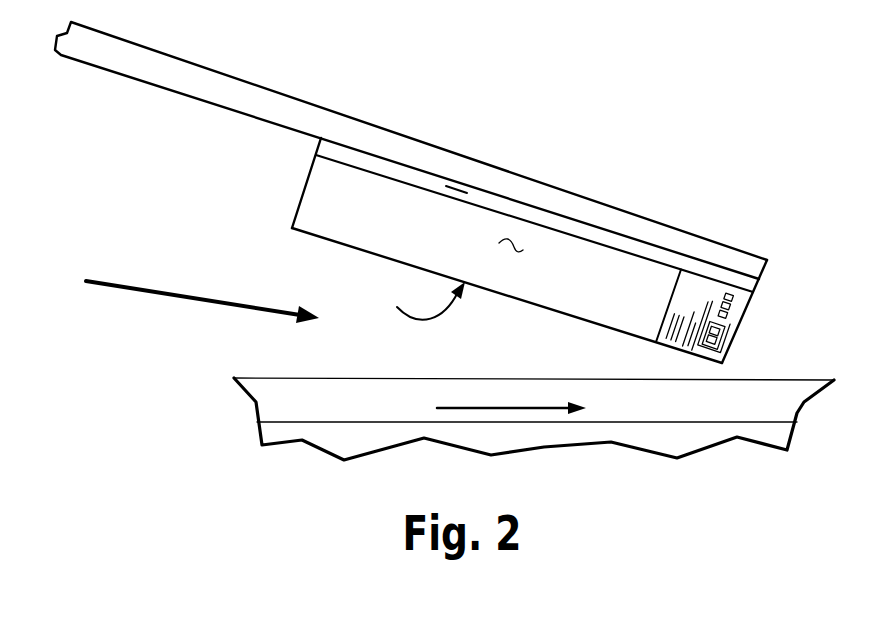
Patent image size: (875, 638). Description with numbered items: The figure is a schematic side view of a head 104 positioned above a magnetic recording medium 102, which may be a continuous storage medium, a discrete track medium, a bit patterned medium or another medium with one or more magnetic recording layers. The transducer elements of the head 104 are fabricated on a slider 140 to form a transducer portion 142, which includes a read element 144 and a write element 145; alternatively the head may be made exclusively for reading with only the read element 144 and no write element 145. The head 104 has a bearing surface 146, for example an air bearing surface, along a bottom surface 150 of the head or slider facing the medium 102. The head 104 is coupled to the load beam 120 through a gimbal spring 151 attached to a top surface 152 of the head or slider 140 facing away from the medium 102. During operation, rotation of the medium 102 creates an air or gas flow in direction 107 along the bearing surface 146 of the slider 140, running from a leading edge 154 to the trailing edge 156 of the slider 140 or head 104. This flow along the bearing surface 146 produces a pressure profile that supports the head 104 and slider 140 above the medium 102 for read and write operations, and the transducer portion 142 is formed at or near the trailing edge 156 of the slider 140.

The medium 102 is at (762, 414).
The head 104 is at (551, 227).
The direction 107 is at (505, 407).
The load beam 120 is at (338, 128).
The slider 140 is at (510, 246).
The transducer portion 142 is at (760, 296).
The read element 144 is at (682, 298).
The write element 145 is at (737, 284).
The bearing surface 146 is at (410, 301).
The bottom surface 150 is at (581, 326).
The gimbal spring 151 is at (453, 188).
The top surface 152 is at (588, 240).
The leading edge 154 is at (302, 185).
The trailing edge 156 is at (740, 318).